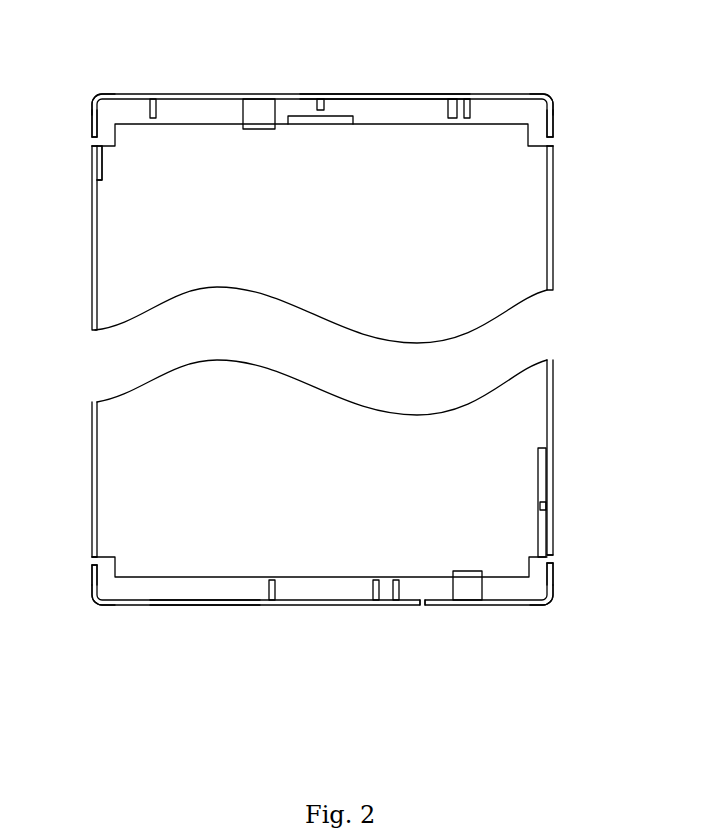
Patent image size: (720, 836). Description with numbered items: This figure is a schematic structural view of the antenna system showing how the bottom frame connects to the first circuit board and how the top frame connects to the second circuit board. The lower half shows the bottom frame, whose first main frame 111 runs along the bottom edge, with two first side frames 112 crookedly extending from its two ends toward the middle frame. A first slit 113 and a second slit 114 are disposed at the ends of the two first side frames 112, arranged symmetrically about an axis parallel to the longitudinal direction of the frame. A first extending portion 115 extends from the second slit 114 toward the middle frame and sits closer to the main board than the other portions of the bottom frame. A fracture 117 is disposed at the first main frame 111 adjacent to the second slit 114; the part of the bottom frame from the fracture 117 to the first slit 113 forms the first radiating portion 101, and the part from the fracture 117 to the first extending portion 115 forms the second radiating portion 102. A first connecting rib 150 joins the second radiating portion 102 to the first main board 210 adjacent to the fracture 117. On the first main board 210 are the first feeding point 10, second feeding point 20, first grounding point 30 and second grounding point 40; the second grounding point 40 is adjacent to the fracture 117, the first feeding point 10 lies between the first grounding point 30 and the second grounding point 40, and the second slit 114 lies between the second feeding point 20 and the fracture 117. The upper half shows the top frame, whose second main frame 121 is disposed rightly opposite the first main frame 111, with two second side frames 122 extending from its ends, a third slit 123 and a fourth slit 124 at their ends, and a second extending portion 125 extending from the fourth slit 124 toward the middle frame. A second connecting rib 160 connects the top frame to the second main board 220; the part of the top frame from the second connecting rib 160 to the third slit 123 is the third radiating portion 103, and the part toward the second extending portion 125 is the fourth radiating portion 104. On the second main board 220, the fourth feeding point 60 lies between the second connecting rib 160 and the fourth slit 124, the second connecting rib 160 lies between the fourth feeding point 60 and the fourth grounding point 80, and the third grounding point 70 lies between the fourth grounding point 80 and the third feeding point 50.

The first feeding point 10 is at (374, 601).
The second feeding point 20 is at (548, 506).
The first grounding point 30 is at (270, 601).
The second grounding point 40 is at (396, 601).
The third feeding point 50 is at (468, 100).
The fourth feeding point 60 is at (152, 101).
The third grounding point 70 is at (452, 100).
The fourth grounding point 80 is at (321, 105).
The first radiating portion 101 is at (131, 606).
The second radiating portion 102 is at (533, 612).
The third radiating portion 103 is at (535, 82).
The fourth radiating portion 104 is at (129, 86).
The first main frame 111 is at (200, 604).
The first side frame 112 is at (91, 586).
The first slit 113 is at (91, 561).
The second slit 114 is at (553, 560).
The first extending portion 115 is at (546, 460).
The fracture 117 is at (423, 606).
The second main frame 121 is at (387, 97).
The second side frame 122 is at (91, 117).
The third slit 123 is at (553, 137).
The fourth slit 124 is at (91, 137).
The second extending portion 125 is at (93, 162).
The first connecting rib 150 is at (468, 590).
The second connecting rib 160 is at (257, 115).
The first main board 210 is at (513, 420).
The second main board 220 is at (512, 234).